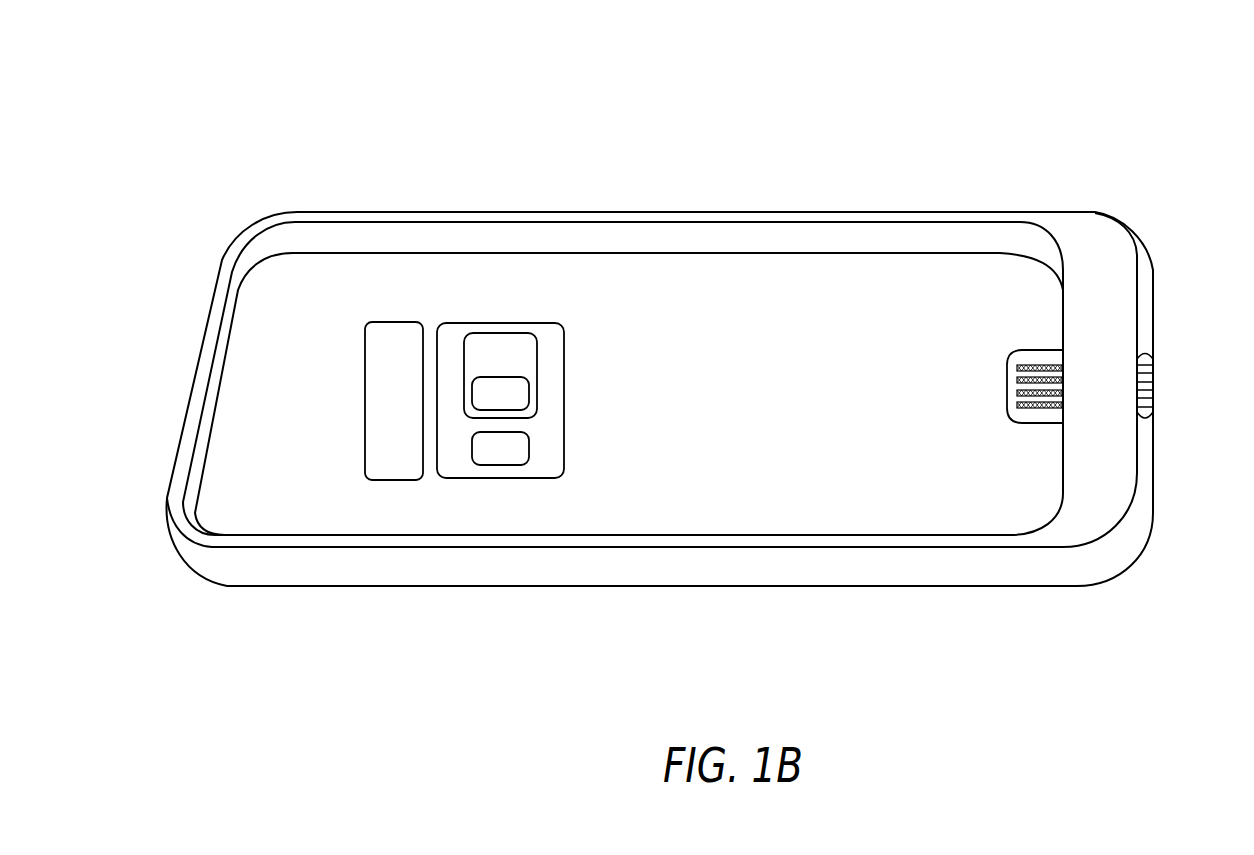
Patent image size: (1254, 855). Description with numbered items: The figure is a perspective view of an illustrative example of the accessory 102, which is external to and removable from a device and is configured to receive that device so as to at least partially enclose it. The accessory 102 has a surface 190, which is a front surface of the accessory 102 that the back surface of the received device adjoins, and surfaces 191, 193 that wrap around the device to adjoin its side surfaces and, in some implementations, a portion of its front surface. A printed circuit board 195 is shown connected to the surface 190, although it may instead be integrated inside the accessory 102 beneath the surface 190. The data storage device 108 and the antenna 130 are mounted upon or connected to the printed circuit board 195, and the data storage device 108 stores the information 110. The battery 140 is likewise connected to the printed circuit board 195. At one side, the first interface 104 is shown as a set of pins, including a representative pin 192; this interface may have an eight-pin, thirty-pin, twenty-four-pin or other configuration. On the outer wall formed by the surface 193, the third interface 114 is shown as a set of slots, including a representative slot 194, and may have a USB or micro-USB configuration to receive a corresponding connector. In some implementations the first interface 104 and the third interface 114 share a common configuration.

The accessory 102 is at (184, 68).
The first interface 104 is at (1007, 367).
The data storage device 108 is at (519, 368).
The information 110 is at (519, 405).
The third interface 114 is at (1142, 353).
The antenna 130 is at (519, 457).
The battery 140 is at (412, 410).
The surface 190 is at (756, 407).
The surface 191 is at (729, 577).
The pin 192 is at (1027, 410).
The surface 193 is at (1118, 330).
The slot 194 is at (1151, 420).
The printed circuit board 195 is at (557, 325).